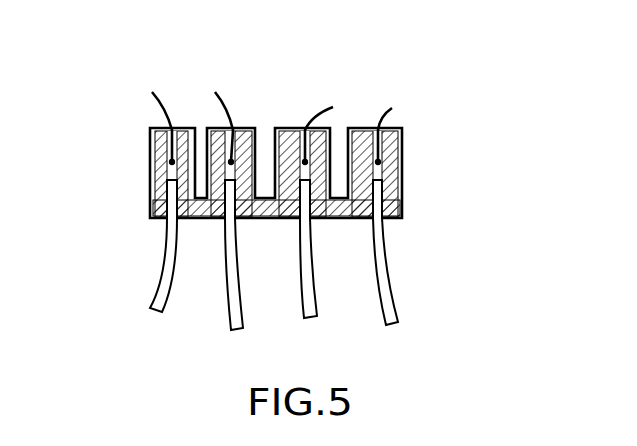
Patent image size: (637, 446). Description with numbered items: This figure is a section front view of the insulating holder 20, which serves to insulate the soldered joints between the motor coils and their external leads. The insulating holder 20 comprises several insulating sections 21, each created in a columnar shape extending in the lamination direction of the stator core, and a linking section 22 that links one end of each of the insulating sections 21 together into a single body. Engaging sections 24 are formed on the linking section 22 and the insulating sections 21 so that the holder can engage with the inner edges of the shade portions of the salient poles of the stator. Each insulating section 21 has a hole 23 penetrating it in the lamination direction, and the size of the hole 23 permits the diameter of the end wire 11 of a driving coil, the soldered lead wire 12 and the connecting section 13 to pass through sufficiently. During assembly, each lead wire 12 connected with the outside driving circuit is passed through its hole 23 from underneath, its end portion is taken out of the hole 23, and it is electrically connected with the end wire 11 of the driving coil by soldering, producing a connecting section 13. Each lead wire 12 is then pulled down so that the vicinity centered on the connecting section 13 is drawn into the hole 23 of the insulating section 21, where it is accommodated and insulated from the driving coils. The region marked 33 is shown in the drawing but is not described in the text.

The end wire 11 is at (156, 107).
The lead wire 12 is at (162, 265).
The connecting section 13 is at (152, 178).
The insulating holder 20 is at (338, 86).
The insulating section 21 is at (157, 147).
The linking section 22 is at (265, 220).
The hole 23 is at (233, 130).
The engaging section 24 is at (402, 200).
The housing side wall 33 is at (402, 157).